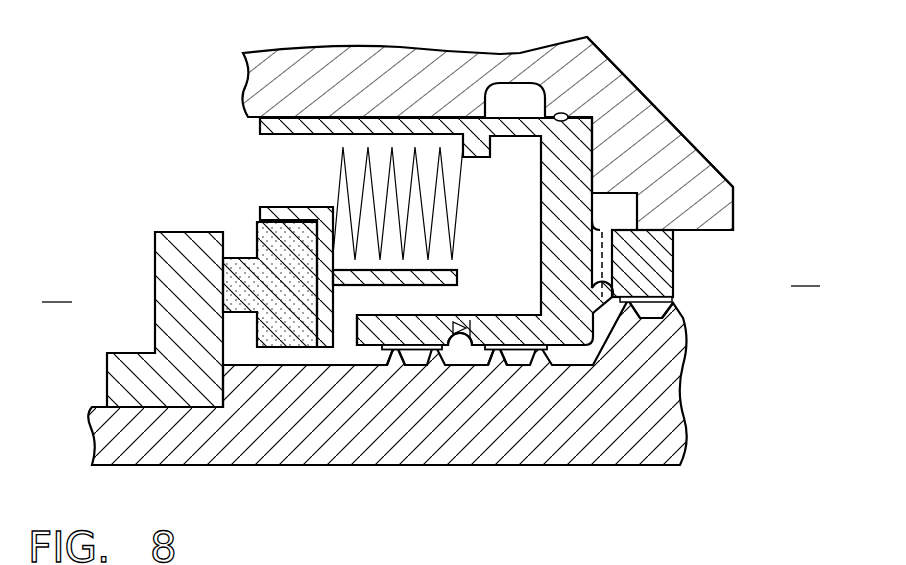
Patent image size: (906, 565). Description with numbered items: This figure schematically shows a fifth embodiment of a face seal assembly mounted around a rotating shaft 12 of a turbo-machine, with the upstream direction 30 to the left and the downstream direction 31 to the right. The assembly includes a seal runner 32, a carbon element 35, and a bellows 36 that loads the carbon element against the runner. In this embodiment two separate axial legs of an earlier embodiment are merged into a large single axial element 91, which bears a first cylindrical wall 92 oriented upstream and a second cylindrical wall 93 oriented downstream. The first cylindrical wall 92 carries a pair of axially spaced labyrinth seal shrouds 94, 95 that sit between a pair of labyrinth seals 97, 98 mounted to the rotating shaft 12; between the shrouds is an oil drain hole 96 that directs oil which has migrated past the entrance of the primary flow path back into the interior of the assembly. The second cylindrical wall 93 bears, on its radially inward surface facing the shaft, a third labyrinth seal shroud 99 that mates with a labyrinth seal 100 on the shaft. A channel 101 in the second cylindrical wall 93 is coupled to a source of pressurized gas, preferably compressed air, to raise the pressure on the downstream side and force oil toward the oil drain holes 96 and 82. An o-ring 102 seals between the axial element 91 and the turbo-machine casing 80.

The rotating shaft 12 is at (313, 455).
The upstream direction 30 is at (57, 288).
The downstream direction 31 is at (805, 272).
The seal runner 32 is at (163, 258).
The carbon element 35 is at (258, 230).
The bellows 36 is at (337, 200).
The turbo-machine casing 80 is at (710, 190).
The oil drain hole 82 is at (496, 62).
The axial element 91 is at (594, 150).
The first cylindrical wall 92 is at (357, 347).
The second cylindrical wall 93 is at (650, 273).
The labyrinth seal shroud 94 is at (410, 352).
The labyrinth seal shroud 95 is at (498, 358).
The oil drain hole 96 is at (462, 318).
The labyrinth seal 97 is at (393, 367).
The labyrinth seal 98 is at (497, 362).
The third labyrinth seal shroud 99 is at (648, 305).
The labyrinth seal 100 is at (633, 318).
The channel 101 is at (622, 258).
The o-ring 102 is at (563, 112).